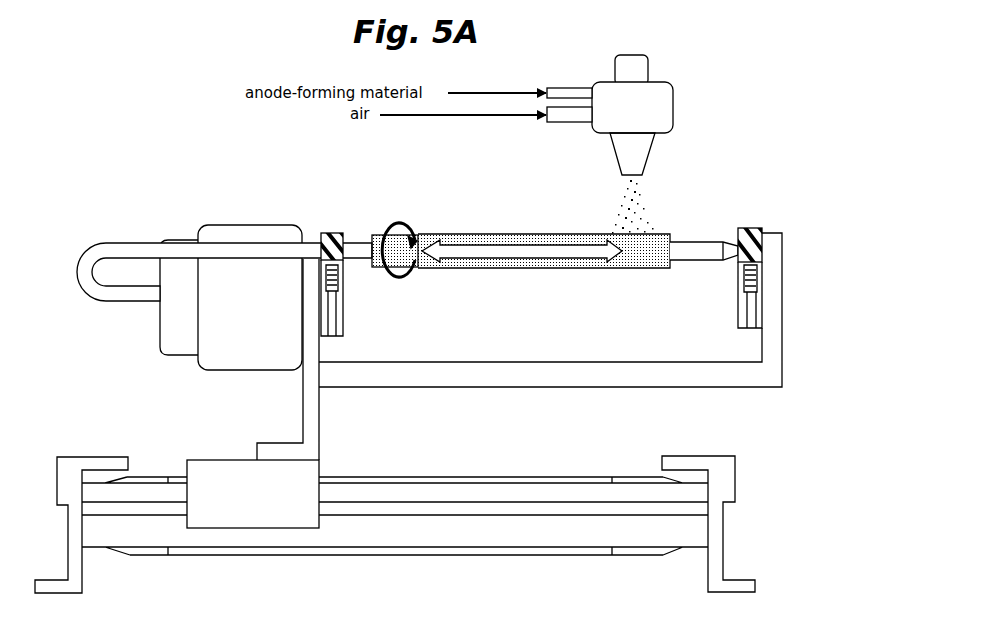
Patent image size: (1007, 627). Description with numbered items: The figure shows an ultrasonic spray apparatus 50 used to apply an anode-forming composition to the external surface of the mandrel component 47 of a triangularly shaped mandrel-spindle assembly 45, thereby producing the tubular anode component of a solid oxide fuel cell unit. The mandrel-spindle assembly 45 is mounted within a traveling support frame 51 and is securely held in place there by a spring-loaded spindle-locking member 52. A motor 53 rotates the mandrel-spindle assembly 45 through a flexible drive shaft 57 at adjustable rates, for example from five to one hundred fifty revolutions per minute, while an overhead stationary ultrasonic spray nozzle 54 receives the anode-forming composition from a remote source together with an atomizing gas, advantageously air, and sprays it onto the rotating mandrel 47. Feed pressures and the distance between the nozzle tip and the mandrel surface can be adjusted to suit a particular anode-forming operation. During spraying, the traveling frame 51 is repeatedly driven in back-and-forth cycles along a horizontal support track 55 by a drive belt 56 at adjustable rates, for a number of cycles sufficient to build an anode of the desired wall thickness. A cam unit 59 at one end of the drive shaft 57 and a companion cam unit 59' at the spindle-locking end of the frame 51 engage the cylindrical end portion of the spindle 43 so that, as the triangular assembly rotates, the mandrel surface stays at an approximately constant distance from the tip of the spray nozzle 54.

The spindle 43 is at (700, 250).
The mandrel-spindle assembly 45 is at (517, 240).
The mandrel component 47 is at (660, 245).
The ultrasonic spray apparatus 50 is at (720, 94).
The traveling support frame 51 is at (517, 378).
The spring-loaded spindle-locking member 52 is at (728, 232).
The motor 53 is at (222, 226).
The ultrasonic spray nozzle 54 is at (637, 158).
The horizontal support track 55 is at (460, 530).
The drive belt 56 is at (523, 473).
The flexible drive shaft 57 is at (132, 252).
The cam unit 59 is at (313, 255).
The companion cam unit 59' is at (779, 196).